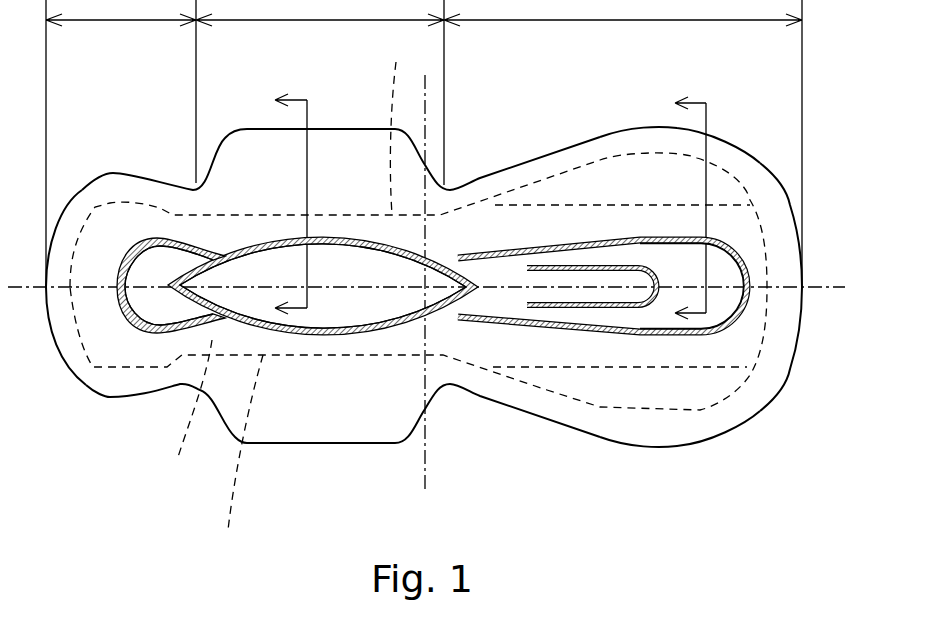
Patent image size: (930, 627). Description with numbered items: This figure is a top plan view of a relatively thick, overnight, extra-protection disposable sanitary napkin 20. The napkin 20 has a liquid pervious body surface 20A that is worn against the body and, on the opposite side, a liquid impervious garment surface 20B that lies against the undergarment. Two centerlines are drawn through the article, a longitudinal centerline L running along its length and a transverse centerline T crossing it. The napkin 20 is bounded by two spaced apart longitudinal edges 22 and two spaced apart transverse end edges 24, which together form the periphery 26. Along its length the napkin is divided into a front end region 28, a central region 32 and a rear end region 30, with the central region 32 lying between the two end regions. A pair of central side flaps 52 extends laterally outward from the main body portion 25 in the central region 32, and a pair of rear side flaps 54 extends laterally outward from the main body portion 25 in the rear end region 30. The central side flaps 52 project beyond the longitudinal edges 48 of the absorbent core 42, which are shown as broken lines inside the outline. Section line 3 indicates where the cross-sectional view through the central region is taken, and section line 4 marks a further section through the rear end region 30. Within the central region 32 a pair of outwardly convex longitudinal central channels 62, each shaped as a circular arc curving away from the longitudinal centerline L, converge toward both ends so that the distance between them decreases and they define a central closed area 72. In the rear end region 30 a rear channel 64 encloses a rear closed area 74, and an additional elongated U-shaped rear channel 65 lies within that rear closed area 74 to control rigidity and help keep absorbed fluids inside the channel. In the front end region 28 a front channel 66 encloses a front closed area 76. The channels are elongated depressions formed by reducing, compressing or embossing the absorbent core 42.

The sanitary napkin 20 is at (91, 446).
The body surface 20A is at (658, 397).
The garment surface 20B is at (755, 194).
The longitudinal edges 22 is at (492, 173).
The end edges 24 is at (53, 333).
The main body portion 25 is at (327, 391).
The periphery 26 is at (613, 440).
The front end region 28 is at (121, 143).
The rear end region 30 is at (623, 143).
The central region 32 is at (320, 92).
The absorbent core 42 is at (189, 412).
The longitudinal edges of absorbent core 48 is at (313, 300).
The central side flaps 52 is at (332, 142).
The rear side flaps 54 is at (635, 180).
The longitudinal central channels 62 is at (350, 237).
The rear channel 64 is at (572, 262).
The additional rear channel 65 is at (532, 262).
The front channel 66 is at (128, 252).
The central closed area 72 is at (267, 267).
The rear closed area 74 is at (683, 272).
The front closed area 76 is at (148, 300).
The section line 3- 3 is at (281, 204).
The section line 4- 4 is at (680, 208).
The transverse centerline T is at (427, 478).
The longitudinal centerline L is at (823, 289).